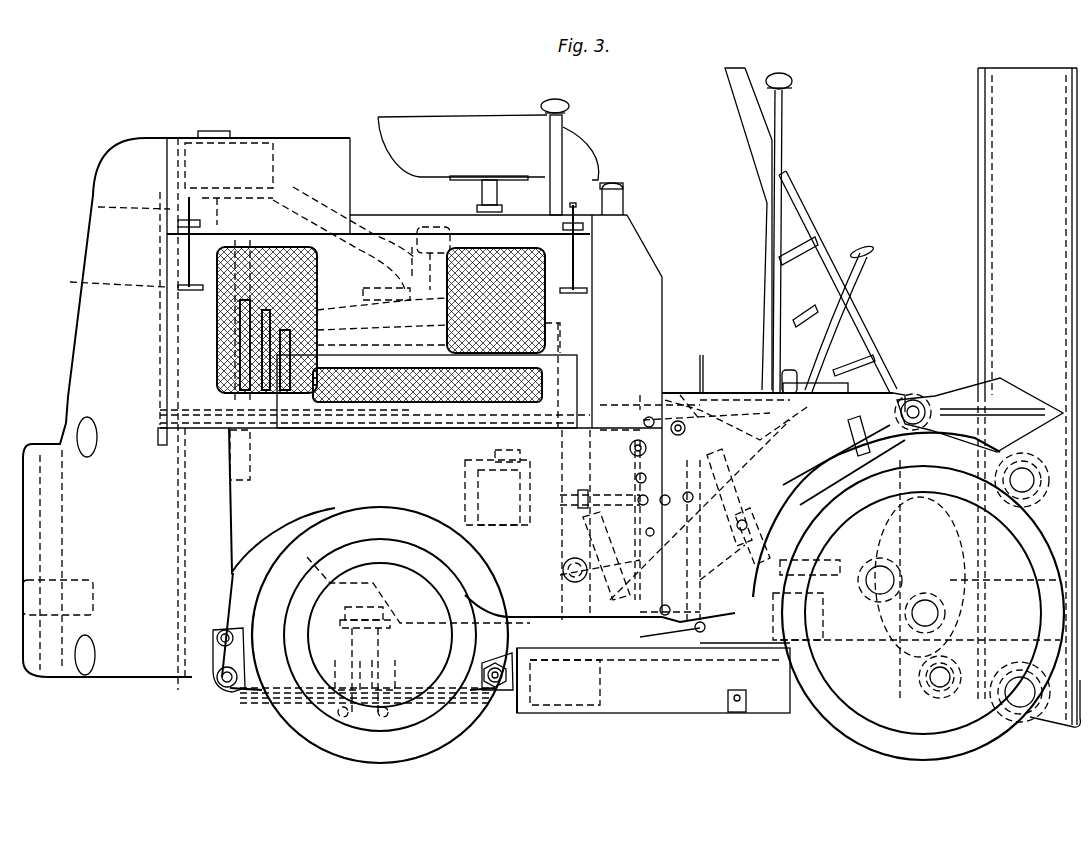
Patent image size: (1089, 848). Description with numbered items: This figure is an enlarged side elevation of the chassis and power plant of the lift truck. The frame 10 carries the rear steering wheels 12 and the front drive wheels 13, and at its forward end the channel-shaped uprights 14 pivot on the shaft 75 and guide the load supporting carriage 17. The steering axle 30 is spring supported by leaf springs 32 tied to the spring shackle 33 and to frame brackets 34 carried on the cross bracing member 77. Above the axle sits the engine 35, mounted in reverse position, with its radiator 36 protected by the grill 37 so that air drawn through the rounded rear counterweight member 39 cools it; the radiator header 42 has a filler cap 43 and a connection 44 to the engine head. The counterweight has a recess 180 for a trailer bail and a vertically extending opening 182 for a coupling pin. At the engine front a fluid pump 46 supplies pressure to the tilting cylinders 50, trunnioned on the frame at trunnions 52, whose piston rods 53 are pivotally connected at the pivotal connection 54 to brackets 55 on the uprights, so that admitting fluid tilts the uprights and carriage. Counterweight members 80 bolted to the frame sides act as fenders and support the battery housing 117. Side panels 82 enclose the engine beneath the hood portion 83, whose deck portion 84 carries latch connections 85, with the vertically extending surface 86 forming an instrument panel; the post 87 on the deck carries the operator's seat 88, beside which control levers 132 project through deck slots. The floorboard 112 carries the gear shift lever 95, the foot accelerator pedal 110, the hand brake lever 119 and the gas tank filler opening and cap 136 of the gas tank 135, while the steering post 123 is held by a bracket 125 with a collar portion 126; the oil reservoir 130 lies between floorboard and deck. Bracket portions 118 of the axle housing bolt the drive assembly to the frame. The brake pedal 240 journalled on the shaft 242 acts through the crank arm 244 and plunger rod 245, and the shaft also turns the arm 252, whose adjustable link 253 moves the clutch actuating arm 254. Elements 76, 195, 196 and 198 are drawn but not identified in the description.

The frame 10 is at (600, 715).
The rear steering wheels 12 is at (308, 732).
The front drive wheels 13 is at (878, 748).
The channel-shaped uprights 14 is at (995, 178).
The load supporting carriage 17 is at (1065, 727).
The steering axle 30 is at (345, 642).
The leaf springs 32 is at (250, 705).
The spring shackle 33 is at (220, 690).
The frame brackets 34 is at (493, 694).
The engine 35 is at (560, 335).
The radiator 36 is at (180, 338).
The grill 37 is at (72, 282).
The rear counterweight member 39 is at (80, 378).
The header 42 is at (238, 160).
The filler cap 43 is at (216, 131).
The connection 44 is at (313, 200).
The fluid pump 46 is at (240, 520).
The tilting cylinders 50 is at (747, 541).
The trunnions 52 is at (576, 583).
The piston rods 53 is at (845, 445).
The pivotal connection 54 is at (913, 400).
The brackets 55 is at (1012, 382).
The shaft 75 is at (938, 698).
The pulley 76 is at (990, 695).
The cross bracing member 77 is at (522, 715).
The counterweight members 80 is at (252, 566).
The side panels 82 is at (590, 243).
The hood portion 83 is at (300, 138).
The deck portion 84 is at (388, 234).
The latch connections 85 is at (578, 258).
The vertically extending surface 86 is at (350, 183).
The post 87 is at (482, 195).
The seat 88 is at (460, 128).
The gear shift lever 95 is at (782, 112).
The foot accelerator pedal 110 is at (862, 362).
The floorboard 112 is at (713, 362).
The housing 117 is at (575, 365).
The bracket portions 118 is at (870, 566).
The hand brake lever 119 is at (850, 272).
The steering post 123 is at (758, 173).
The bracket 125 is at (855, 320).
The collar portion 126 is at (800, 248).
The oil reservoir 130 is at (662, 300).
The control levers 132 is at (562, 132).
The gas tank 135 is at (770, 685).
The filler opening and cap 136 is at (840, 372).
The recess 180 is at (75, 590).
The vertically extending opening 182 is at (60, 490).
The cylinder 195 is at (700, 540).
The cylinder 196 is at (642, 520).
The pivot 198 is at (690, 604).
The brake pedal 240 is at (740, 398).
The shaft 242 is at (640, 398).
The crank arm 244 is at (636, 476).
The plunger rod 245 is at (615, 492).
The arm 252 is at (684, 398).
The adjustable link 253 is at (630, 447).
The actuating arm 254 is at (724, 569).